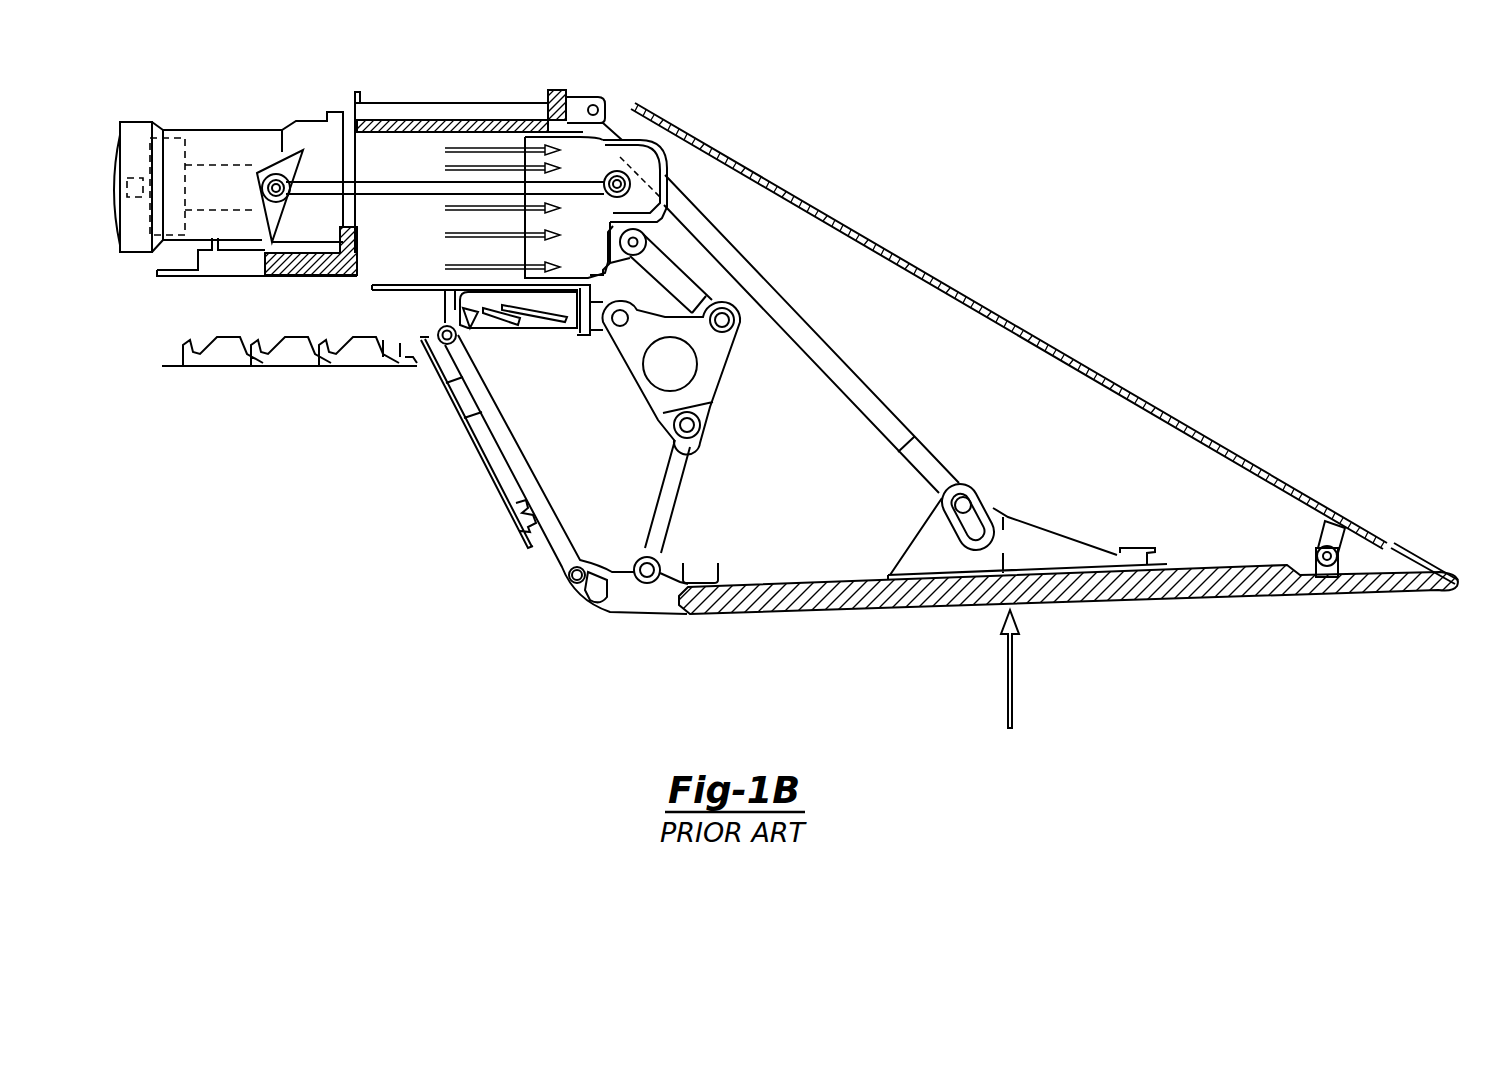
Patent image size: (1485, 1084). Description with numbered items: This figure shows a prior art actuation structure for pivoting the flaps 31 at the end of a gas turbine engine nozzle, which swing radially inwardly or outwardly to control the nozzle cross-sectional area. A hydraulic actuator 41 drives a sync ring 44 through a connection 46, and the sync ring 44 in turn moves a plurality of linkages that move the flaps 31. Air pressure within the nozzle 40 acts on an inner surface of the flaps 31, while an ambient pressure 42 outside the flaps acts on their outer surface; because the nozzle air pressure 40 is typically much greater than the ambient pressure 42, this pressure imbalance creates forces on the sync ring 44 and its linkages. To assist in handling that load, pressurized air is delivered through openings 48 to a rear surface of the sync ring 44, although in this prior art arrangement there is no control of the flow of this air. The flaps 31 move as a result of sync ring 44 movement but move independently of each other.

The flaps 31 is at (1170, 597).
The air pressure within the nozzle 40 is at (968, 683).
The hydraulic actuator 41 is at (217, 150).
The ambient pressure 42 is at (1096, 301).
The sync ring 44 is at (660, 160).
The connection 46 is at (610, 163).
The openings 48 is at (368, 287).